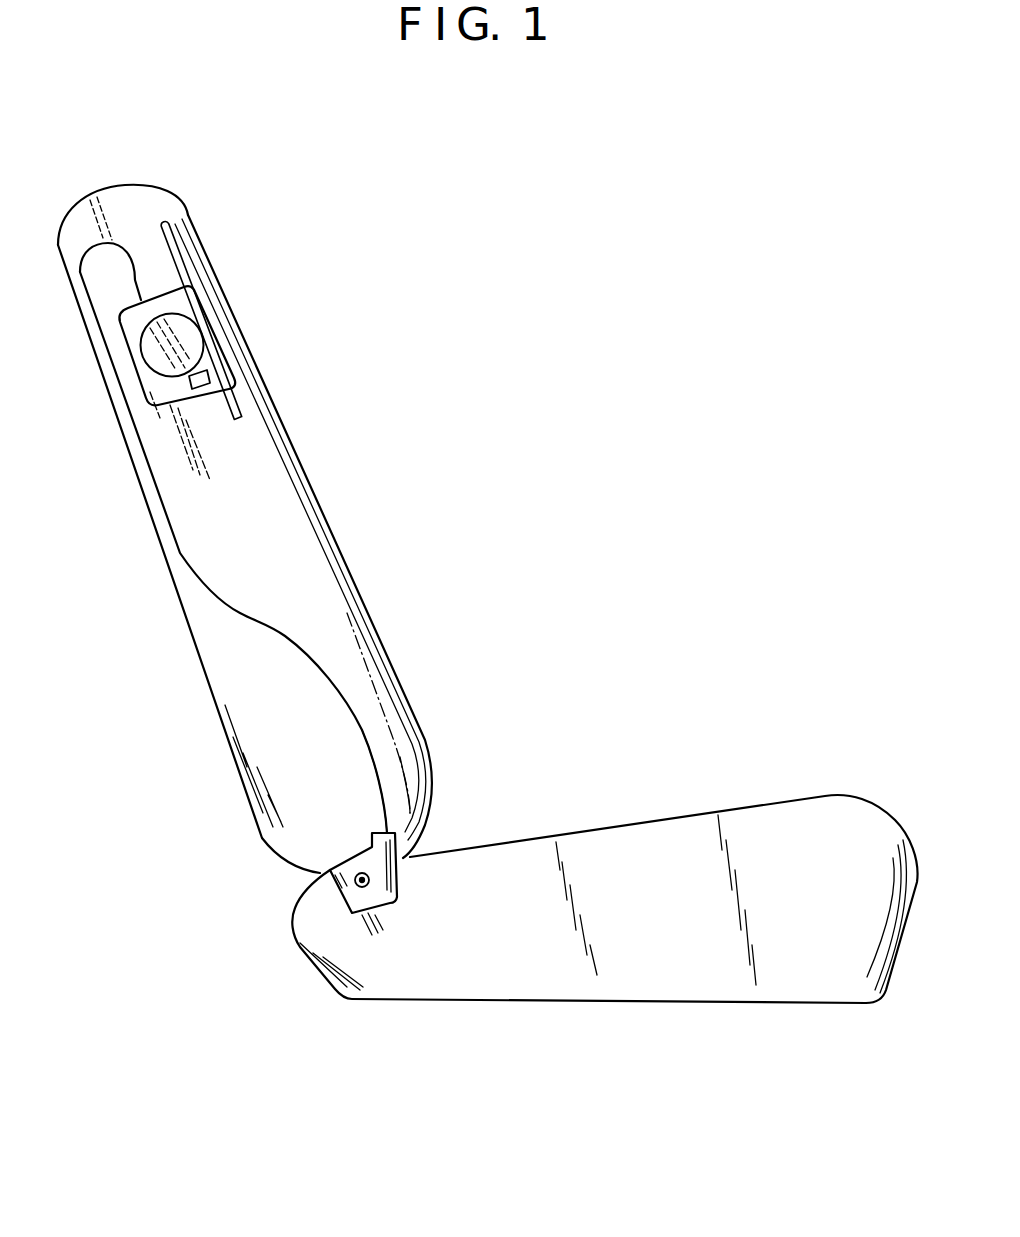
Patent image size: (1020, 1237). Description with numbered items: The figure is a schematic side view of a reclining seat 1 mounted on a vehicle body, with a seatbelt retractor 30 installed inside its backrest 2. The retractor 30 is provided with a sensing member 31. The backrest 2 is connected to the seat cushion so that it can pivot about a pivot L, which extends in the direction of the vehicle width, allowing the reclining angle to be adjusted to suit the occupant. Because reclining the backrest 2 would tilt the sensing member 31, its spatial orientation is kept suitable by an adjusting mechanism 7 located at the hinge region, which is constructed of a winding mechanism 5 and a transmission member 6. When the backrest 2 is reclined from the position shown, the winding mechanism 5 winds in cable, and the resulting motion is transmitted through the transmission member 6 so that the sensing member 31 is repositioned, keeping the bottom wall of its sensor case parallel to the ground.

The reclining seat 1 is at (448, 433).
The backrest 2 is at (288, 503).
The winding mechanism 5 is at (407, 857).
The transmission member 6 is at (370, 720).
The adjusting mechanism 7 is at (527, 623).
The seatbelt retractor 30 is at (187, 317).
The sensing member 31 is at (213, 377).
The pivot L is at (353, 887).